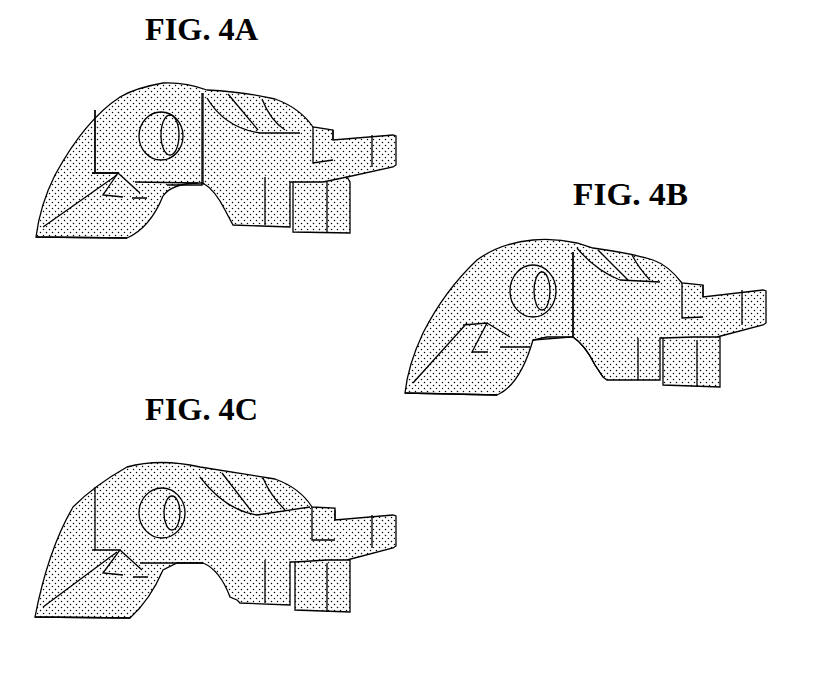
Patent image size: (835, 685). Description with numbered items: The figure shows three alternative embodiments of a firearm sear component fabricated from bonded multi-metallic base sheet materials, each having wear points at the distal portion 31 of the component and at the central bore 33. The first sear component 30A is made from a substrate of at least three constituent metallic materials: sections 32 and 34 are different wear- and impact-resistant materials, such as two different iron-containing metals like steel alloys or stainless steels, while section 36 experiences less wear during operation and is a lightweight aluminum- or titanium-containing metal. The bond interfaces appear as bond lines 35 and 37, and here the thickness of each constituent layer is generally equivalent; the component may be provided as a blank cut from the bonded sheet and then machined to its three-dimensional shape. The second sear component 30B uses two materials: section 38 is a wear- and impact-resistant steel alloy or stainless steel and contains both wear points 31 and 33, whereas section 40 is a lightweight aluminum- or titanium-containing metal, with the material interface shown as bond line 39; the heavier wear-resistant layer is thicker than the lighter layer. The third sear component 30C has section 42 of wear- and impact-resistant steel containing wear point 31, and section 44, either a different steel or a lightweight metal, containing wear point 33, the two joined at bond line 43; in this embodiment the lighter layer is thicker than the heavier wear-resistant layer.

In FIG. 4A, the sear component 30A is at (325, 105).
In FIG. 4B, the sear component 30B is at (687, 258).
In FIG. 4C, the sear component 30C is at (262, 455).
In FIG. 4A, the distal portion 31 is at (100, 240).
In FIG. 4B, the distal portion 31 is at (460, 397).
In FIG. 4C, the distal portion 31 is at (90, 620).
In FIG. 4A, the section 32 is at (85, 169).
In FIG. 4A, the central bore 33 is at (143, 86).
In FIG. 4B, the central bore 33 is at (515, 243).
In FIG. 4C, the central bore 33 is at (145, 467).
In FIG. 4A, the section 34 is at (121, 146).
In FIG. 4A, the bond line 35 is at (86, 124).
In FIG. 4A, the section 36 is at (247, 166).
In FIG. 4A, the bond line 37 is at (226, 99).
In FIG. 4B, the section 38 is at (492, 300).
In FIG. 4B, the bond line 39 is at (585, 338).
In FIG. 4B, the section 40 is at (616, 325).
In FIG. 4C, the section 42 is at (134, 554).
In FIG. 4C, the bond line 43 is at (90, 490).
In FIG. 4C, the section 44 is at (244, 536).